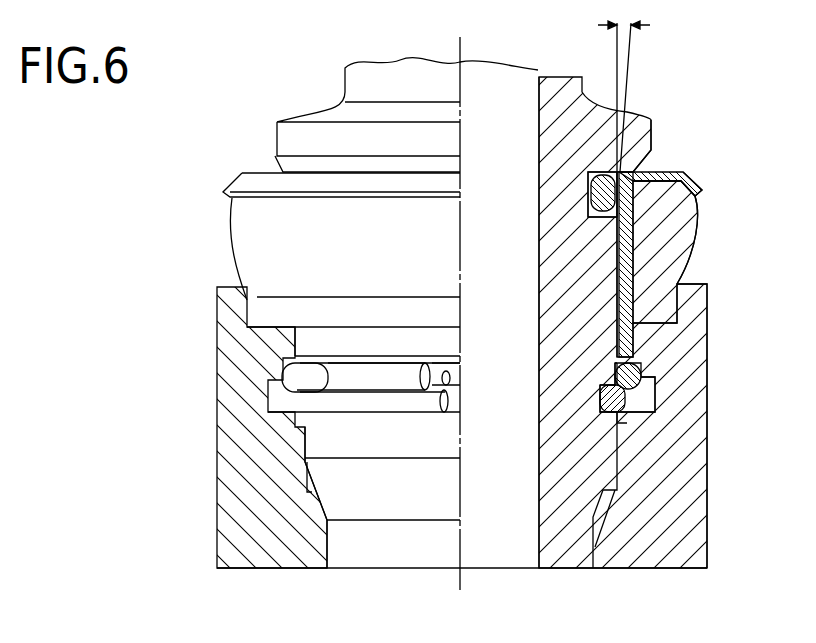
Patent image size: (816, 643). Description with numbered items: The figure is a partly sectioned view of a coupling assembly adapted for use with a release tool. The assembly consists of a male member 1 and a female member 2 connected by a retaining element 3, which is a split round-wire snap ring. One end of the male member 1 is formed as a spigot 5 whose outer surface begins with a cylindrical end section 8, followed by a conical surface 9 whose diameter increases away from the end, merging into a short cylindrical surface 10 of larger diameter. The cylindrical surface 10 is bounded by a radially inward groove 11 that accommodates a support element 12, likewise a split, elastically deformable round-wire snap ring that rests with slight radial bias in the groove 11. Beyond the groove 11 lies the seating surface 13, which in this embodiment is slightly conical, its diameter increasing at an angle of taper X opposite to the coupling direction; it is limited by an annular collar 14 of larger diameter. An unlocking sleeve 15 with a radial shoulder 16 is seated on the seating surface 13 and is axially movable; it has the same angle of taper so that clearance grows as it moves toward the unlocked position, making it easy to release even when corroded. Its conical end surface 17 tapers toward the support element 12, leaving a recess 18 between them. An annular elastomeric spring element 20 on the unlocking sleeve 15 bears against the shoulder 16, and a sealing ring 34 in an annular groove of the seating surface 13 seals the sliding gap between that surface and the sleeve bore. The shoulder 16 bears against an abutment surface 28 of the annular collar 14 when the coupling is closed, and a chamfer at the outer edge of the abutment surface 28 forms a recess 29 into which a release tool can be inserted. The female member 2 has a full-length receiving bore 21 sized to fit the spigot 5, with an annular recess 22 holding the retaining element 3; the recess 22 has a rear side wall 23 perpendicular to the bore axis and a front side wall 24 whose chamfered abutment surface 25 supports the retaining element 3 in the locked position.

The male member 1 is at (347, 81).
The female member 2 is at (230, 542).
The retaining element 3 is at (653, 390).
The spigot 5 is at (643, 460).
The cylindrical end section 8 is at (428, 545).
The conical surface 9 is at (392, 505).
The cylindrical surface 10 is at (297, 438).
The groove 11 is at (600, 405).
The support element 12 is at (600, 393).
The seating surface 13 is at (617, 309).
The annular collar 14 is at (282, 148).
The unlocking sleeve 15 is at (303, 345).
The shoulder 16 is at (686, 172).
The conical end surface 17 is at (280, 382).
The recess 18 is at (447, 385).
The spring element 20 is at (250, 247).
The receiving bore 21 is at (307, 512).
The annular recess 22 is at (625, 400).
The rear side wall 23 is at (645, 420).
The front side wall 24 is at (642, 372).
The abutment surface 25 is at (641, 350).
The abutment surface 28 is at (633, 137).
The recess 29 is at (650, 168).
The sealing ring 34 is at (588, 200).
The angle of taper X is at (630, 37).